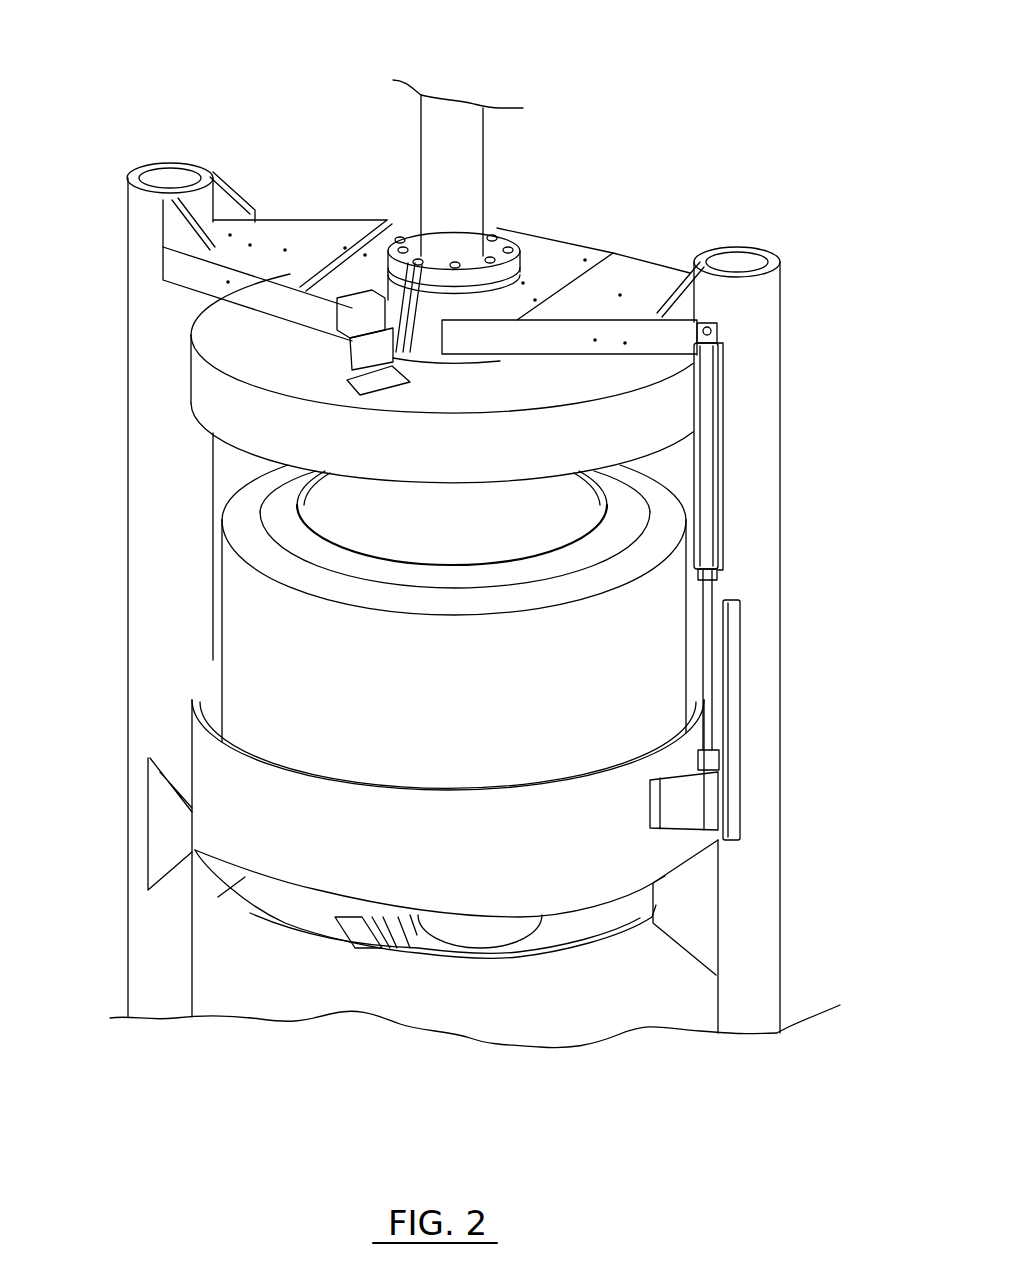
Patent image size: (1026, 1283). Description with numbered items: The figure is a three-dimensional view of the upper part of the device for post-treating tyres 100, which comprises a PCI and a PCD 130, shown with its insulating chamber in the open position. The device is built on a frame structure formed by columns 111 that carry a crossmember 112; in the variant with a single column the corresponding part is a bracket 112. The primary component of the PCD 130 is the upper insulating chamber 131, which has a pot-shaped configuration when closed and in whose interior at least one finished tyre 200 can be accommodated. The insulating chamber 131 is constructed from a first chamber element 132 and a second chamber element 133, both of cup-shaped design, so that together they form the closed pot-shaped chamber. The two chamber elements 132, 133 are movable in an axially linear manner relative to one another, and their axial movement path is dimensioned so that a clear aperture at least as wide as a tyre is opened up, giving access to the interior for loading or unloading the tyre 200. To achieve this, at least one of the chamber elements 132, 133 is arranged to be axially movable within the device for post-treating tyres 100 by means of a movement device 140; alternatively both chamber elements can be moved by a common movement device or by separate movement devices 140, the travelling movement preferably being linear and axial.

The device for post-treating tyres 100 is at (645, 210).
The column 111 is at (162, 333).
The crossmember 112 is at (272, 230).
The PCD 130 is at (801, 433).
The upper insulating chamber 131 is at (761, 689).
The first chamber element 132 is at (223, 413).
The second chamber element 133 is at (192, 693).
The movement device 140 is at (432, 182).
The tyre 200 is at (257, 675).